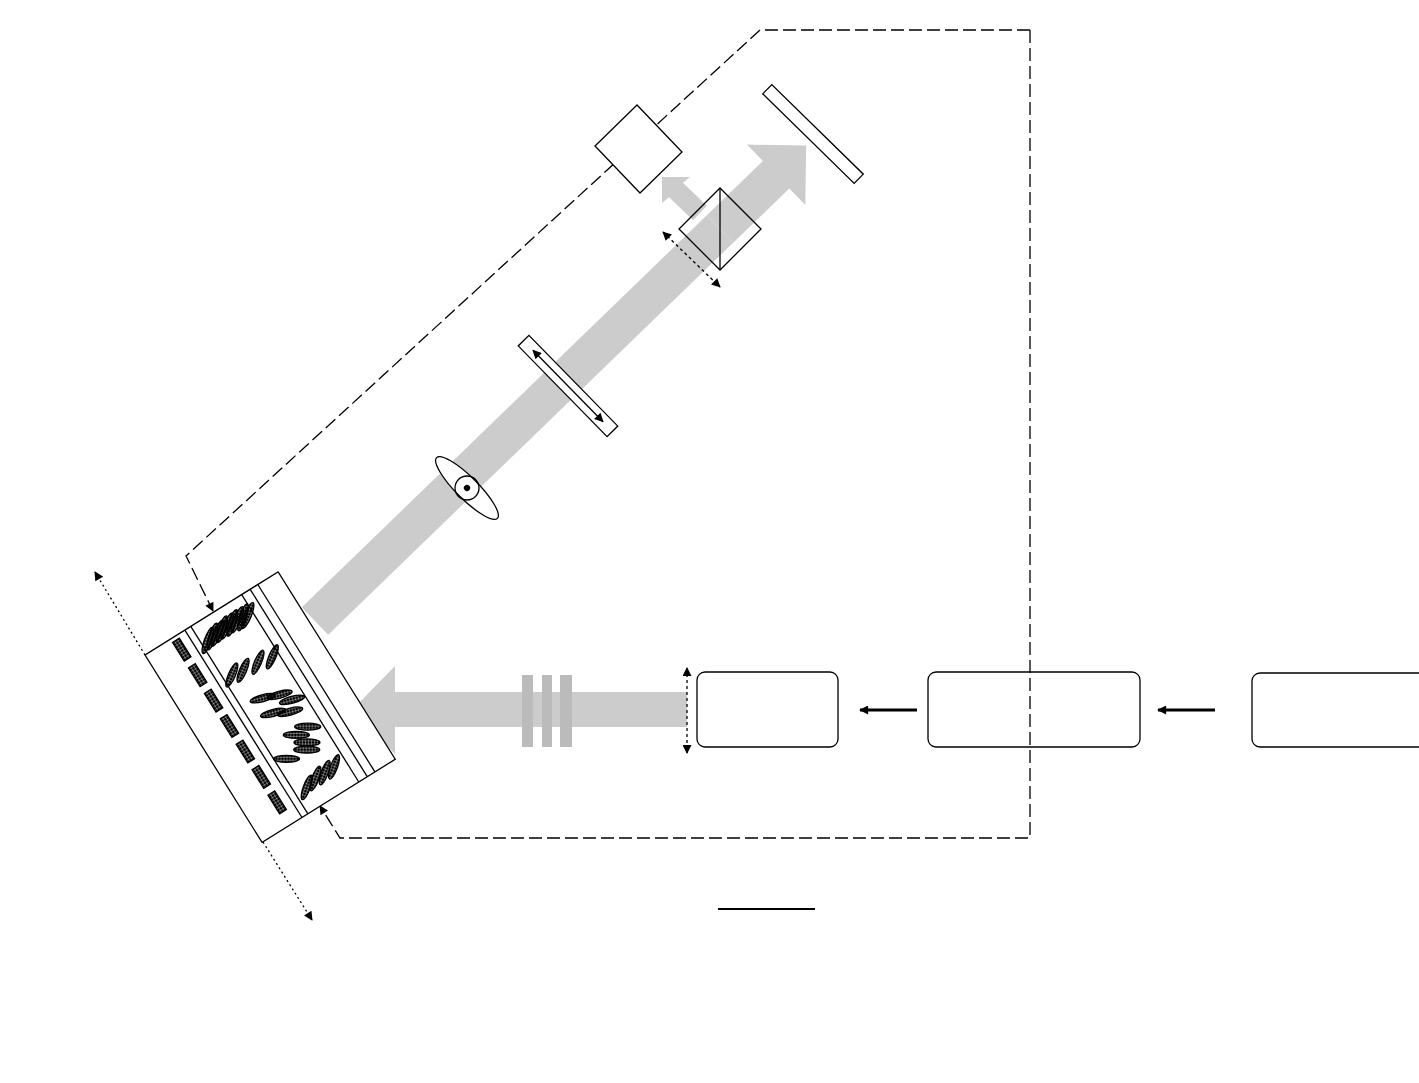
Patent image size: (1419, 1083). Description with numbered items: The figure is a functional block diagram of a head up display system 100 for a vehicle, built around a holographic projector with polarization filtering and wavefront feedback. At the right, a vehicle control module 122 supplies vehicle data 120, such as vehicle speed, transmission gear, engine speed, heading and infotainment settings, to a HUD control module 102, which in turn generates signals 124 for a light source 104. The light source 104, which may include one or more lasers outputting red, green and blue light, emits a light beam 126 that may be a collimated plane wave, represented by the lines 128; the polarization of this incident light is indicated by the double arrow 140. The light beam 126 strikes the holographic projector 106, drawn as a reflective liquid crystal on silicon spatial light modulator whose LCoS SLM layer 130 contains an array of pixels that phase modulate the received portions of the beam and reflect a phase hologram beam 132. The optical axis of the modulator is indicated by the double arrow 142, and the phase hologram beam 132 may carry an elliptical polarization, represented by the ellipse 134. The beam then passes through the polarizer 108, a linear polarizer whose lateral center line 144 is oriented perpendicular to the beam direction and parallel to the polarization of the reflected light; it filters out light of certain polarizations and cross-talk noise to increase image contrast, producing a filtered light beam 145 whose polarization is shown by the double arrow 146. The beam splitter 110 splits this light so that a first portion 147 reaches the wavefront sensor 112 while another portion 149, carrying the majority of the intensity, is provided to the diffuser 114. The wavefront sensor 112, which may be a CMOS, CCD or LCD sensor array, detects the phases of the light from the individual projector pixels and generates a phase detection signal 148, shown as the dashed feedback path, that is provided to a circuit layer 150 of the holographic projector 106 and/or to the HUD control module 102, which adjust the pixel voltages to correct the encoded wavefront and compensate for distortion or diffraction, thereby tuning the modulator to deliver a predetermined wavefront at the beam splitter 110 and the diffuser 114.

The HUD system 100 is at (250, 126).
The HUD control module 102 is at (1082, 672).
The light source 104 is at (785, 672).
The holographic projector 106 is at (145, 655).
The polarizer 108 is at (590, 397).
The beam splitter 110 is at (742, 248).
The wavefront sensor 112 is at (615, 123).
The diffuser 114 is at (847, 152).
The vehicle data 120 is at (1184, 708).
The vehicle control module 122 is at (1337, 673).
The signals 124 is at (893, 698).
The light beam 126 is at (603, 728).
The lines 128 is at (527, 673).
The LCoS SLM layer 130 is at (198, 620).
The phase hologram beam 132 is at (385, 598).
The ellipse 134 is at (492, 500).
The double arrow 140 is at (684, 668).
The double arrow 142 is at (117, 612).
The lateral center line 144 is at (533, 357).
The filtered light beam 145 is at (660, 316).
The double arrow 146 is at (675, 243).
The first portion 147 is at (685, 205).
The phase detection signal 148 is at (1033, 230).
The another portion 149 is at (742, 190).
The circuit layer 150 is at (248, 762).